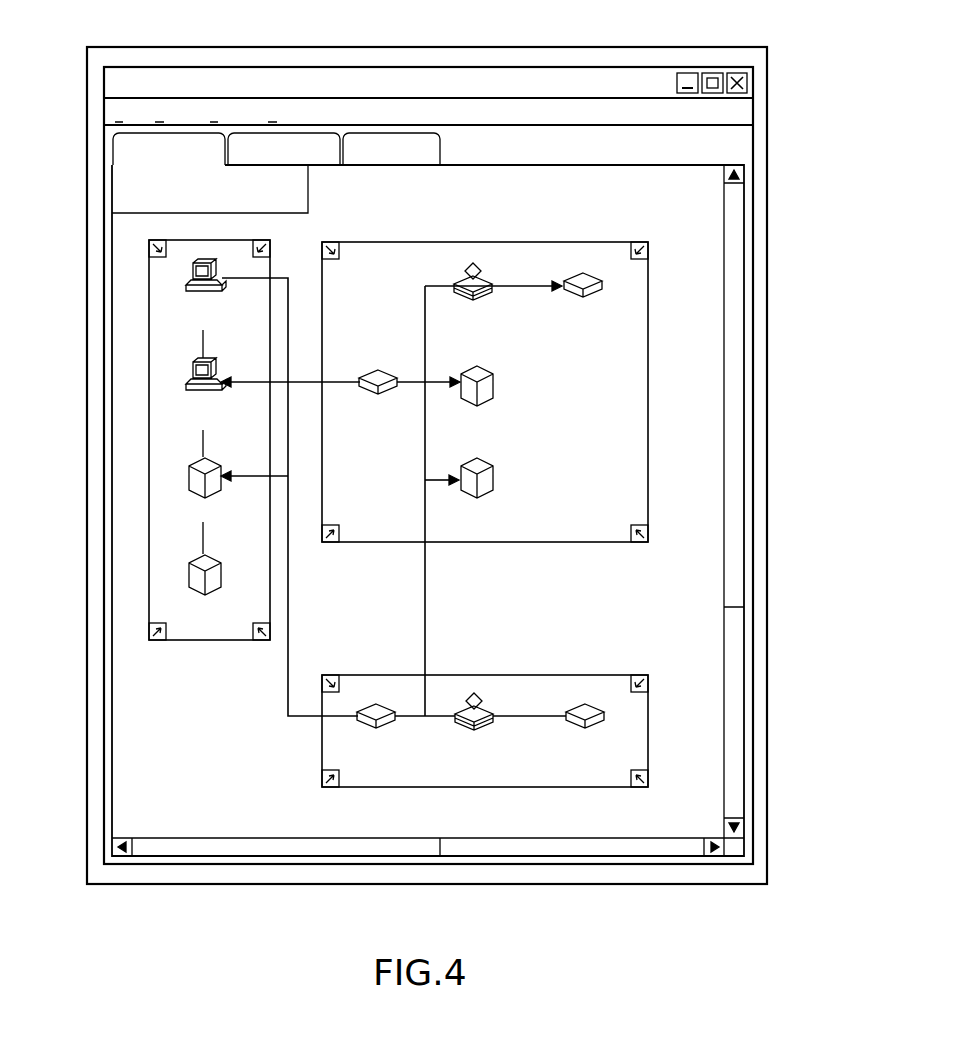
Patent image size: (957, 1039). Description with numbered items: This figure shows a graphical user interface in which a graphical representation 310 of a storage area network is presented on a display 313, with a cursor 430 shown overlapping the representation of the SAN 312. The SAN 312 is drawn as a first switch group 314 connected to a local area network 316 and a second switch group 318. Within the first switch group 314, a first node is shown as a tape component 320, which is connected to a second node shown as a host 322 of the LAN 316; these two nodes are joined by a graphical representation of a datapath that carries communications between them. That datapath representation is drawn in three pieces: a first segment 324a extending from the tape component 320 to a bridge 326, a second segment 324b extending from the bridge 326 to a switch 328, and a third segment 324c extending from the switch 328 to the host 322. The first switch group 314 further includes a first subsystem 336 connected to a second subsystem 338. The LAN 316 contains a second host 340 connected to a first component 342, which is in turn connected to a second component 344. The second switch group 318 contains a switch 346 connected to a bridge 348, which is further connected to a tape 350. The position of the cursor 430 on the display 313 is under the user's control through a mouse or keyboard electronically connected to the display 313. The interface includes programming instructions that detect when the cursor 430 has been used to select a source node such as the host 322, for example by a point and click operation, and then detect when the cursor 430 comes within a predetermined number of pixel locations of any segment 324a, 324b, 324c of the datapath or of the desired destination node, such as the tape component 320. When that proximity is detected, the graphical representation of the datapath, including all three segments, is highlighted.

The graphical representation 310 is at (772, 529).
The SAN 312 is at (622, 223).
The display 313 is at (770, 47).
The first switch group 314 is at (650, 410).
The local area network (LAN) 316 is at (157, 642).
The second switch group 318 is at (603, 676).
The tape component 320 is at (580, 272).
The host 322 is at (185, 271).
The first datapath segment 324a is at (515, 284).
The second datapath segment 324b is at (425, 282).
The datapath segment 324c is at (288, 275).
The bridge 326 is at (473, 263).
The switch 328 is at (372, 368).
The first subsystem 336 is at (495, 385).
The second subsystem 338 is at (495, 477).
The second host 340 is at (185, 378).
The first component 342 is at (189, 475).
The second component 344 is at (189, 577).
The switch 346 is at (367, 703).
The bridge 348 is at (474, 693).
The tape 350 is at (604, 714).
The cursor 430 is at (598, 297).